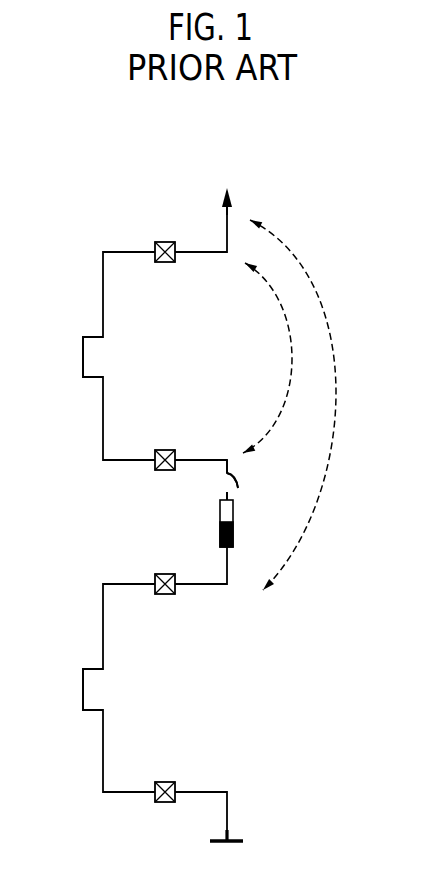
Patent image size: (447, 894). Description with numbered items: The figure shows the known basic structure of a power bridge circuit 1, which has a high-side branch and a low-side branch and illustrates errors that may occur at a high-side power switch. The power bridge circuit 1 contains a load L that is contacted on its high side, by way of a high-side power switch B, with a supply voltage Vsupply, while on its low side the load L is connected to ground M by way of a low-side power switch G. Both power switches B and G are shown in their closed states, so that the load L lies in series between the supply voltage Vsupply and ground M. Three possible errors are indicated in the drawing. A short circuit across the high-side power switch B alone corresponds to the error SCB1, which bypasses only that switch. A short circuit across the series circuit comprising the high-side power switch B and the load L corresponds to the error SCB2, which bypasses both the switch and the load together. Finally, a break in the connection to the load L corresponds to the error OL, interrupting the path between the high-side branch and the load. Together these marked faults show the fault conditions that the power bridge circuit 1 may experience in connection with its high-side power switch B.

The power bridge circuit 1 is at (124, 178).
The supply voltage Vsupply is at (226, 178).
The high-side power switch B is at (83, 357).
The low-side power switch G is at (83, 690).
The load L is at (220, 513).
The error OL is at (204, 487).
The error SCB1 is at (292, 345).
The error SCB2 is at (314, 505).
The ground M is at (226, 854).